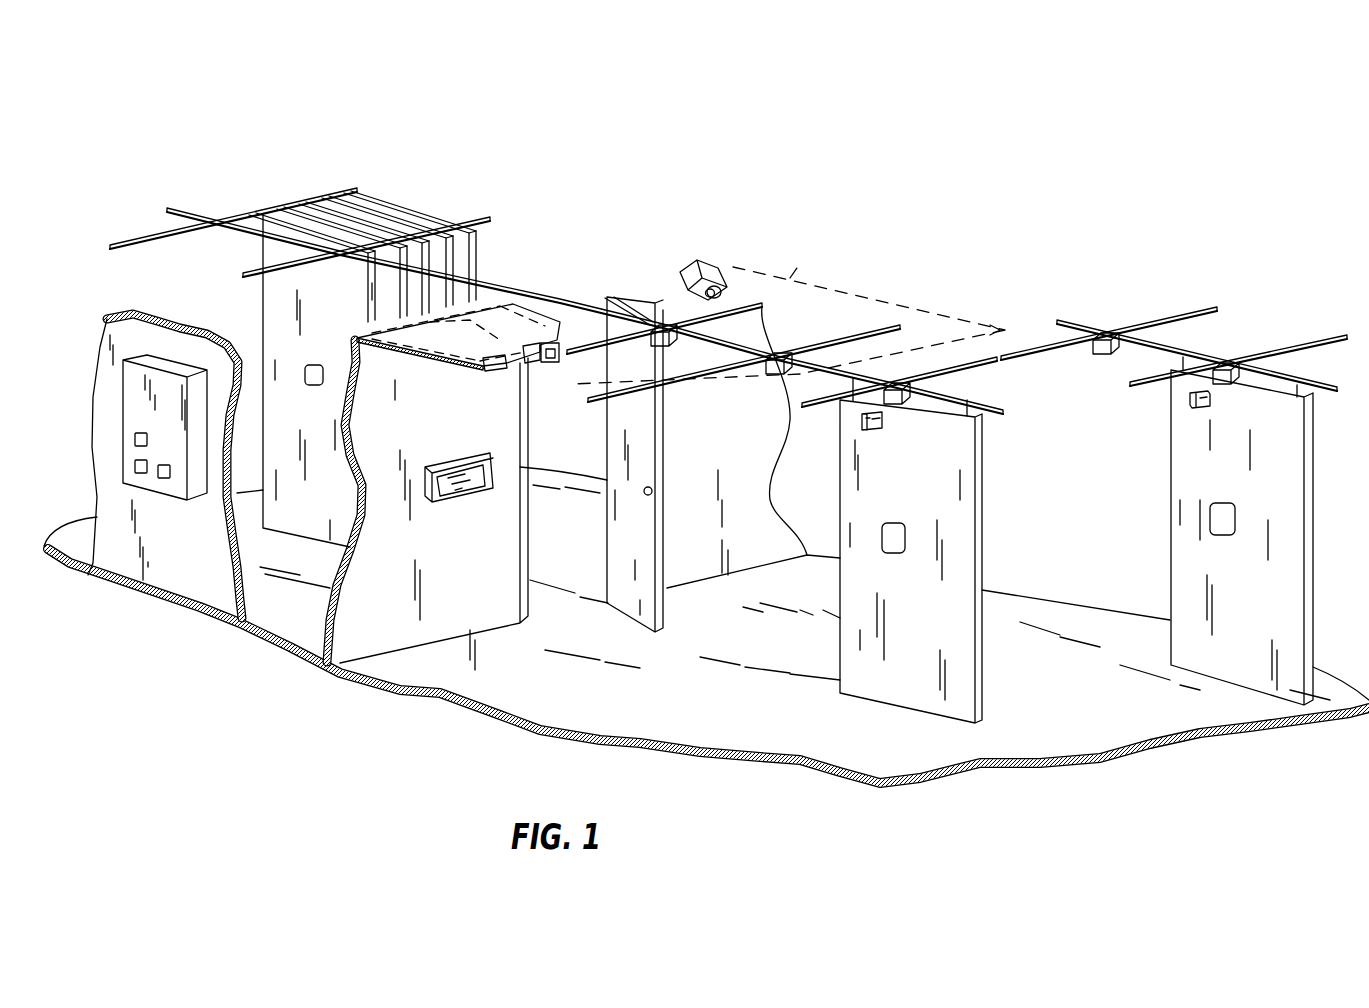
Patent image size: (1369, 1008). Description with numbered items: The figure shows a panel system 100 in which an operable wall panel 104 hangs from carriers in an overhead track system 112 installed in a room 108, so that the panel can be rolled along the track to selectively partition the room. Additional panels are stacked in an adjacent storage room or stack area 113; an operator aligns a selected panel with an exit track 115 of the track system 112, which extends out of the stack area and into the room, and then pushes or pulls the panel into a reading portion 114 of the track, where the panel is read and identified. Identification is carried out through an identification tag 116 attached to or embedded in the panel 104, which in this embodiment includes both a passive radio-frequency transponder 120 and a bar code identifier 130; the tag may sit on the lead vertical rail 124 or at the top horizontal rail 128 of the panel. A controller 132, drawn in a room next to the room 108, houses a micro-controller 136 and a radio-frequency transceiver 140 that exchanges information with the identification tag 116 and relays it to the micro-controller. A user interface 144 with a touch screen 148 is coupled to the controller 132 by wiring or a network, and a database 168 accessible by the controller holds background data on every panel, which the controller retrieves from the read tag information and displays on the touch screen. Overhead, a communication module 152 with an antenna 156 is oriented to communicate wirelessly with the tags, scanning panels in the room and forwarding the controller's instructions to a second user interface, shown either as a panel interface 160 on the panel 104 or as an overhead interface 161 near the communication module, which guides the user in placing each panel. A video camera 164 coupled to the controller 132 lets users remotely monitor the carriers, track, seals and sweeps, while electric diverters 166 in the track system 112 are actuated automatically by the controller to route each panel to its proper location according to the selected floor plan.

The panel system 100 is at (1020, 124).
The operable wall panel 104 is at (270, 306).
The room 108 is at (410, 672).
The overhead track system 112 is at (728, 275).
The stack area 113 is at (293, 620).
The reading portion 114 is at (797, 262).
The exit track 115 is at (487, 282).
The identification tag 116 is at (868, 431).
The transponder 120 is at (862, 422).
The lead vertical rail 124 is at (980, 487).
The top horizontal rail 128 is at (962, 370).
The bar code identifier 130 is at (882, 412).
The controller 132 is at (135, 389).
The micro-controller 136 is at (136, 439).
The transceiver 140 is at (136, 467).
The user interface 144 is at (447, 463).
The touch screen 148 is at (467, 486).
The communication module 152 is at (528, 366).
The antenna 156 is at (558, 334).
The panel interface 160 is at (320, 386).
The overhead interface 161 is at (497, 372).
The video camera 164 is at (700, 261).
The electric diverters 166 is at (680, 347).
The database 168 is at (162, 480).